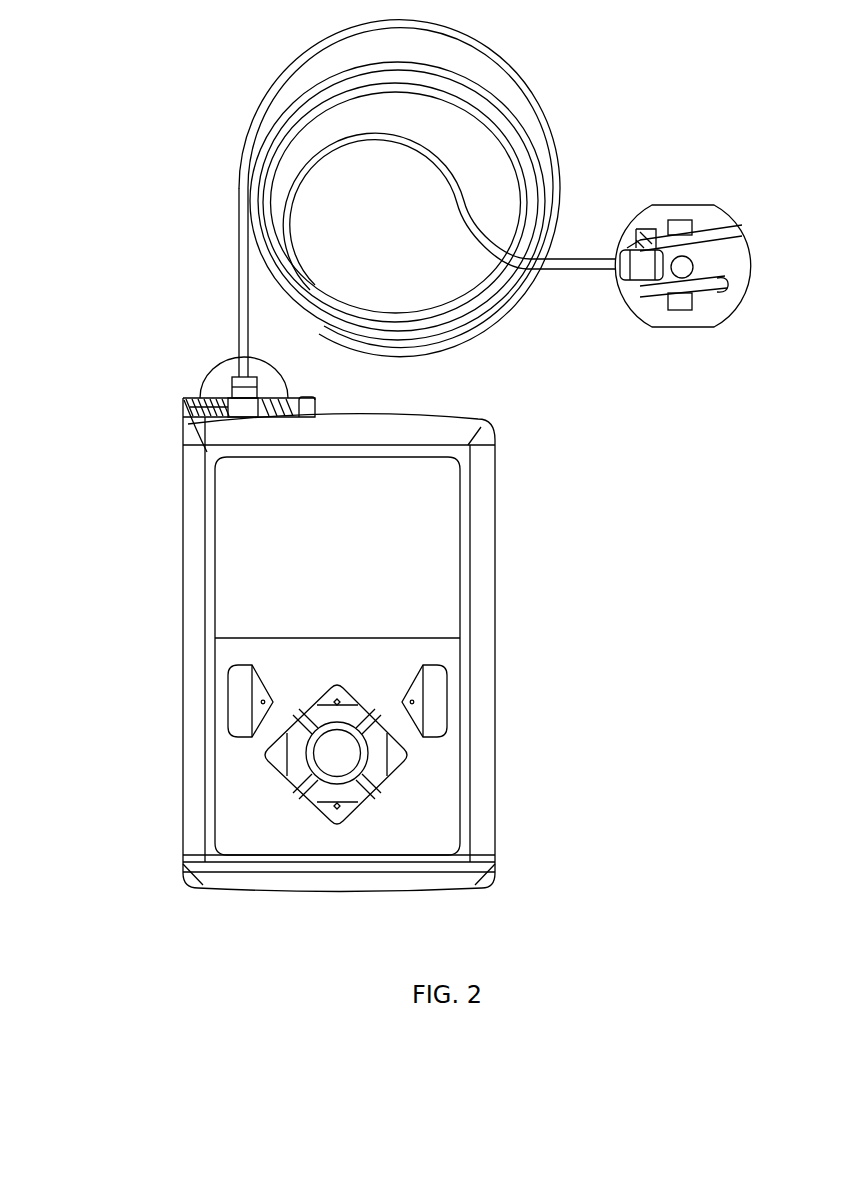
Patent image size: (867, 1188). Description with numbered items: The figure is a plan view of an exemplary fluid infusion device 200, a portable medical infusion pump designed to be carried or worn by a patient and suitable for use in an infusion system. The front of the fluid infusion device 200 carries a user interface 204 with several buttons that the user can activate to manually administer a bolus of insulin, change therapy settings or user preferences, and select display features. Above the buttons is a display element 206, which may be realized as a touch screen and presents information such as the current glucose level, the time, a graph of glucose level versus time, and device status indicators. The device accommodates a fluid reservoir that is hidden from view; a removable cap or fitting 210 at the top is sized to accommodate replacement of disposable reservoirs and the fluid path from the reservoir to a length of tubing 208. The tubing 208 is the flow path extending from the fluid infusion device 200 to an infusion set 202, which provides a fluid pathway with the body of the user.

The fluid infusion device 200 is at (157, 553).
The infusion set 202 is at (623, 130).
The user interface 204 is at (452, 785).
The display element 206 is at (452, 543).
The tubing 208 is at (238, 210).
The removable cap or fitting 210 is at (213, 358).